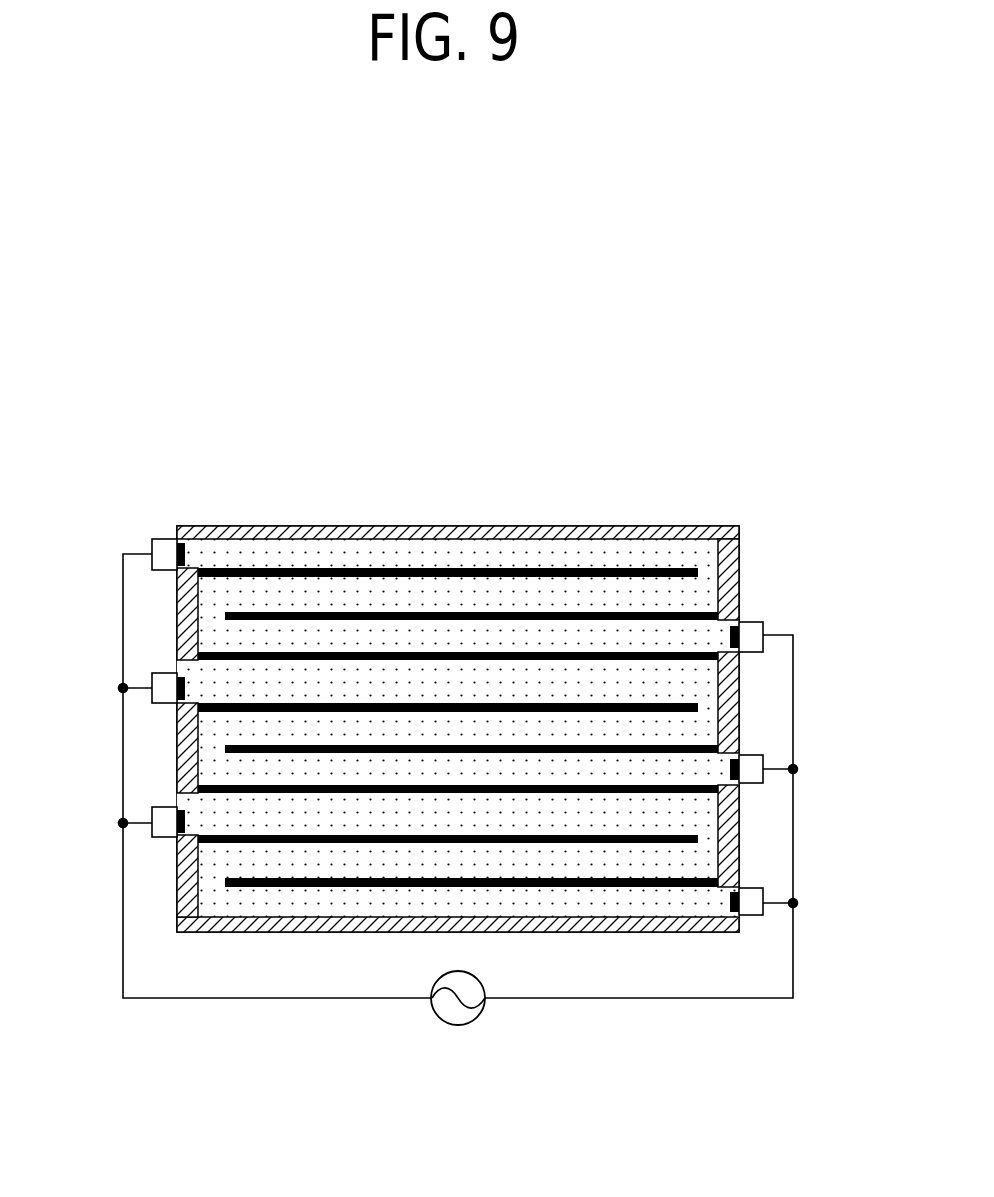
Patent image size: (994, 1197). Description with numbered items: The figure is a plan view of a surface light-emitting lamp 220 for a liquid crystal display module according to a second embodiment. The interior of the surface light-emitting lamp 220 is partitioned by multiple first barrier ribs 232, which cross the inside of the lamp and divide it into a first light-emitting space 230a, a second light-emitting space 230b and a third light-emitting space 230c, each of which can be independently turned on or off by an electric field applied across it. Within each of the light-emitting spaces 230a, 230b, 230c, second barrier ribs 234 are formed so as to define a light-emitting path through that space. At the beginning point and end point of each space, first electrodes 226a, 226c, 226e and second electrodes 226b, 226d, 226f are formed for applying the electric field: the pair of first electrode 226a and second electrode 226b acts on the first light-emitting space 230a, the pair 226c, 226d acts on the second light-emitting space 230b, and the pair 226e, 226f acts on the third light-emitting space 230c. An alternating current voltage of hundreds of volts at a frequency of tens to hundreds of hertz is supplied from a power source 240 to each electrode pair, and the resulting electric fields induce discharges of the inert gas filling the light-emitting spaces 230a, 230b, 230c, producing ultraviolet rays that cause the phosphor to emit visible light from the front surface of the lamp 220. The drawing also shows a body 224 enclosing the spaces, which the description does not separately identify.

The surface light-emitting lamp 220 is at (522, 418).
The housing body with hatched walls 224 is at (290, 938).
The first electrode 226a is at (154, 539).
The second electrode 226b is at (757, 622).
The first electrode 226c is at (160, 692).
The second electrode 226d is at (757, 780).
The first electrode 226e is at (160, 835).
The second electrode 226f is at (760, 915).
The first light-emitting space 230a is at (370, 548).
The second light-emitting space 230b is at (595, 675).
The third light-emitting space 230c is at (620, 862).
The first barrier ribs 232 is at (660, 610).
The second barrier ribs 234 is at (473, 568).
The AC power supply 240 is at (467, 1025).